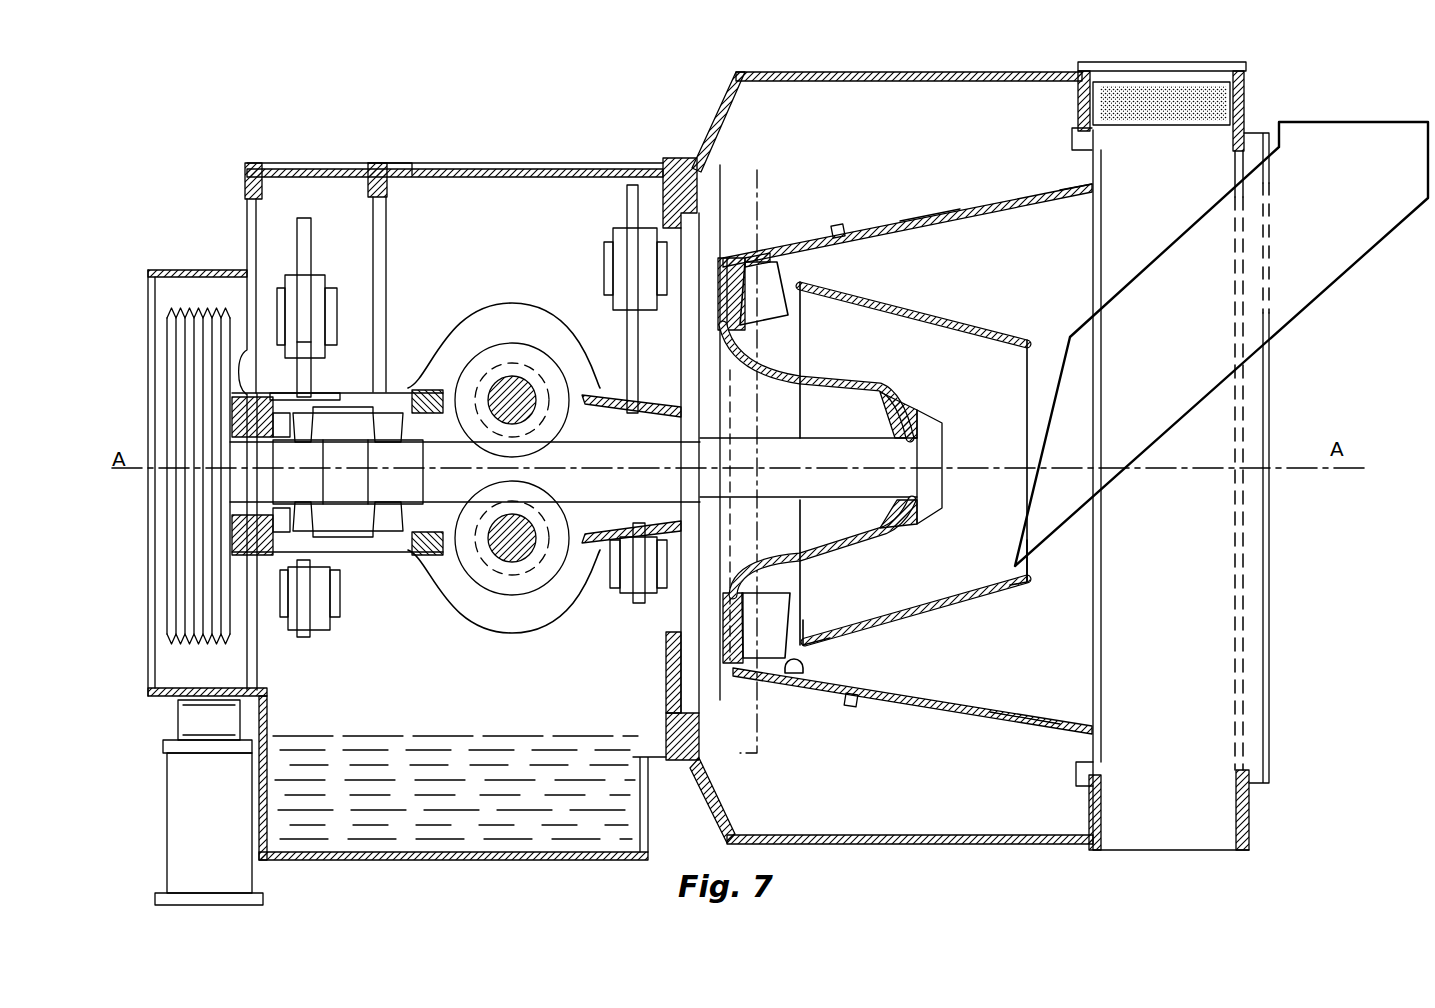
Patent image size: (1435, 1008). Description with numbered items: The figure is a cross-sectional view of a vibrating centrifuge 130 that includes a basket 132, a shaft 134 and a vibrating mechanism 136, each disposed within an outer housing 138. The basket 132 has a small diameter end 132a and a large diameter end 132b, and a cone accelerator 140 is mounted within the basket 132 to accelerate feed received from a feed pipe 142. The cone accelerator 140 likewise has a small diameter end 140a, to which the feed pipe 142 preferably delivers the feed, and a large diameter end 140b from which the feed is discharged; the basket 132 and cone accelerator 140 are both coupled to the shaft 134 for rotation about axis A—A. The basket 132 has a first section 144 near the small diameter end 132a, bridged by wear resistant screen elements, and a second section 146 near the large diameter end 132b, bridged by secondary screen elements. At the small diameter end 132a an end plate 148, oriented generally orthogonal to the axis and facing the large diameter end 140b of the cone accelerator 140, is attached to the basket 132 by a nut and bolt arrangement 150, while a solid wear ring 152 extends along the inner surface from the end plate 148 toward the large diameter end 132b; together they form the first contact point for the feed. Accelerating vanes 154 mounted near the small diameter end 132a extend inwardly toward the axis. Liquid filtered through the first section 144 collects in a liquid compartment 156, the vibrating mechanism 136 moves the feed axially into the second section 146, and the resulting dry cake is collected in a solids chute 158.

The vibrating centrifuge 130 is at (578, 122).
The basket 132 is at (1022, 186).
The small diameter end 132a is at (738, 258).
The large diameter end 132b is at (937, 214).
The shaft 134 is at (757, 510).
The vibrating mechanism 136 is at (452, 286).
The outer housing 138 is at (745, 72).
The cone accelerator 140 is at (984, 320).
The small diameter end 140a is at (1021, 582).
The large diameter end 140b is at (832, 640).
The feed pipe 142 is at (1307, 312).
The first section 144 is at (775, 668).
The second section 146 is at (1025, 716).
The end plate 148 is at (743, 310).
The nut and bolt arrangement 150 is at (748, 300).
The wear ring 152 is at (765, 662).
The accelerating vanes 154 is at (797, 290).
The liquid compartment 156 is at (936, 800).
The solids chute 158 is at (1182, 795).